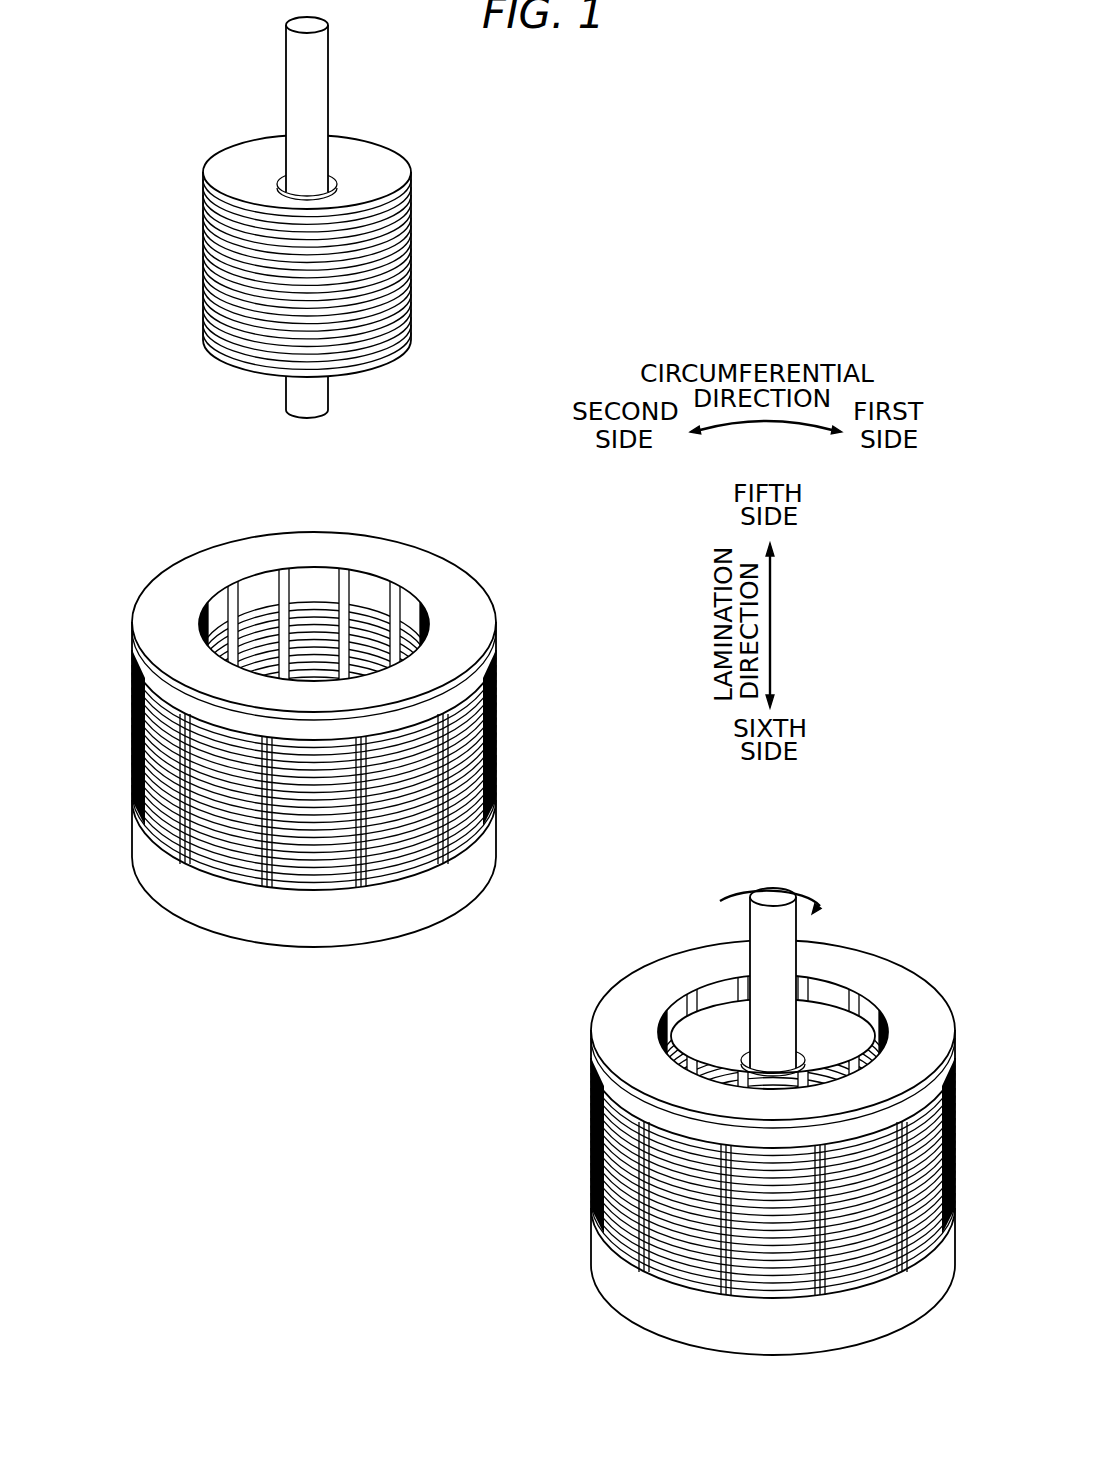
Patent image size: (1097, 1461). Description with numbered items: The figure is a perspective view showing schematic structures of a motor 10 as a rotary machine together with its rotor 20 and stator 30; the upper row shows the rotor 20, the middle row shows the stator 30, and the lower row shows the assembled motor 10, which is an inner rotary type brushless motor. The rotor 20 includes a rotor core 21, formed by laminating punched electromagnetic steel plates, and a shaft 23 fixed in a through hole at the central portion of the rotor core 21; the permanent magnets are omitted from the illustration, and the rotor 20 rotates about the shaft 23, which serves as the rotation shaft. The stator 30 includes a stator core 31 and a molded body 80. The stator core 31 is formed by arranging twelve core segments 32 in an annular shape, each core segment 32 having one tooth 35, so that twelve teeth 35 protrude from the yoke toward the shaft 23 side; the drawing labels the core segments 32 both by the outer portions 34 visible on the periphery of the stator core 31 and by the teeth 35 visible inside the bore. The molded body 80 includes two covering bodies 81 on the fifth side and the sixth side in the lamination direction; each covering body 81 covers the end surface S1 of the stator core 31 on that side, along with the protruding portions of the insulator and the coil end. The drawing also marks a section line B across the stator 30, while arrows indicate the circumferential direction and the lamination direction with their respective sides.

The motor 10 is at (831, 1057).
The rotor 20 is at (294, 212).
The rotor core 21 is at (252, 337).
The shaft 23 is at (285, 97).
The stator 30 is at (313, 722).
The stator core 31 is at (537, 725).
The core segment 32 is at (313, 741).
The first groove 34 is at (128, 757).
The tooth 35 is at (262, 632).
The molded body 80 is at (118, 862).
The covering body 81 is at (177, 640).
The end surface S1 is at (130, 665).
The section line B is at (421, 550).